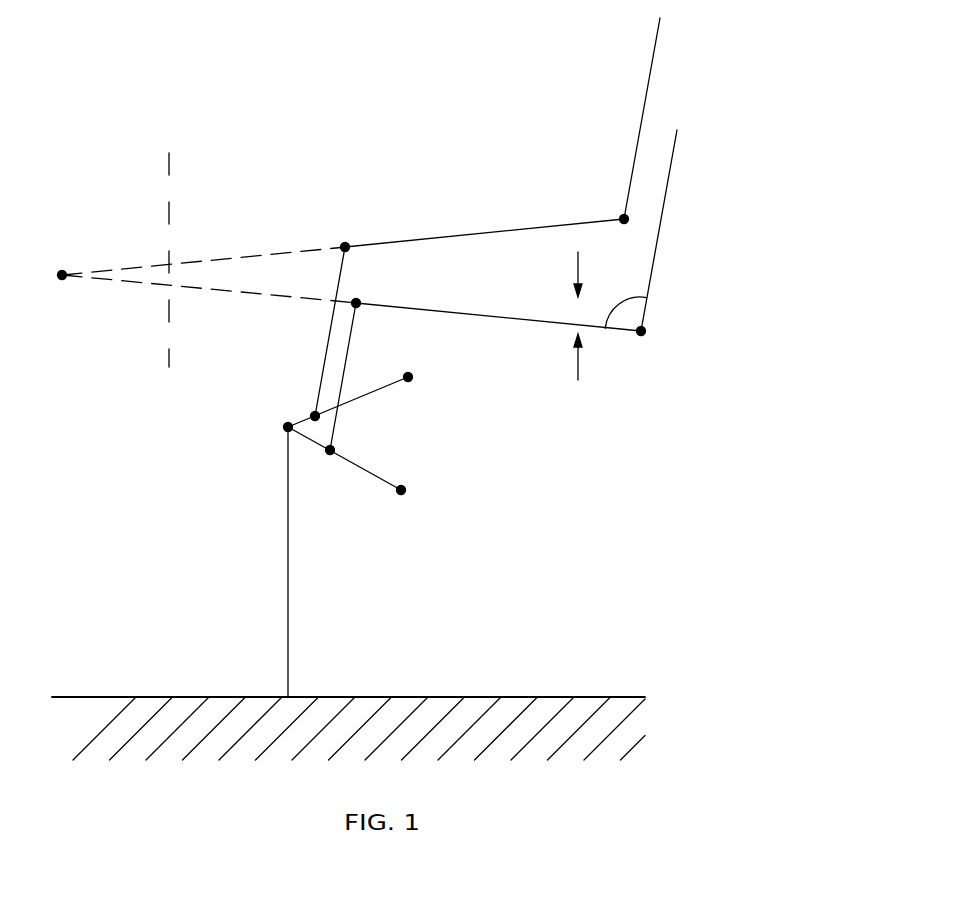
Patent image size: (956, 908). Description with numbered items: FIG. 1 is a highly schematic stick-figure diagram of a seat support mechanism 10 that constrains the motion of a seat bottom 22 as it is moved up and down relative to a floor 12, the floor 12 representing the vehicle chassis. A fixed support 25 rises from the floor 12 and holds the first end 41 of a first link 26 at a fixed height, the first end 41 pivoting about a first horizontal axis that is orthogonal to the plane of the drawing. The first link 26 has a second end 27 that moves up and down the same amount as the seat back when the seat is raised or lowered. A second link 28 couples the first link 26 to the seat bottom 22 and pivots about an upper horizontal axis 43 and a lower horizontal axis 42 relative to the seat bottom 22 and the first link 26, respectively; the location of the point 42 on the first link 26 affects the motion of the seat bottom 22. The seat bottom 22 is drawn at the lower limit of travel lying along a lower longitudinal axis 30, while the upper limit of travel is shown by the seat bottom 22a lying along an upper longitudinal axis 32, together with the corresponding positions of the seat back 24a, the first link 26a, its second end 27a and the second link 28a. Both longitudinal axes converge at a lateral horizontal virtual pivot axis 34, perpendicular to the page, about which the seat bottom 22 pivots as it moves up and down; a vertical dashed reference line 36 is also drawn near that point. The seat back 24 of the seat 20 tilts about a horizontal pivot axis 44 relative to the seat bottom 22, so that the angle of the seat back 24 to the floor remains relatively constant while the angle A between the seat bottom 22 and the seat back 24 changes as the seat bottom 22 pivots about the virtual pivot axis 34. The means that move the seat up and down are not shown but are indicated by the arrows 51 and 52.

The seat support mechanism 10 is at (237, 549).
The floor 12 is at (568, 697).
The seat 20 is at (683, 270).
The seat bottom 22 is at (492, 317).
The seat bottom (upper limit) 22a is at (466, 236).
The seat back 24 is at (665, 207).
The seat back (upper limit) 24a is at (648, 92).
The fixed support 25 is at (288, 630).
The first link 26 is at (372, 475).
The first link (upper limit) 26a is at (362, 402).
The second end of first link 27 is at (405, 491).
The second end of first link (upper limit) 27a is at (412, 378).
The second link 28 is at (342, 373).
The second link (upper limit) 28a is at (340, 280).
The lower longitudinal axis 30 is at (232, 293).
The upper longitudinal axis 32 is at (235, 257).
The virtual pivot axis 34 is at (62, 270).
The reference plane 36 is at (170, 167).
The first end of first link 41 is at (286, 428).
The lower horizontal axis 42 is at (330, 454).
The upper horizontal axis 43 is at (356, 307).
The horizontal pivot axis 44 is at (645, 332).
The arrow 51 is at (578, 362).
The arrow 52 is at (578, 252).